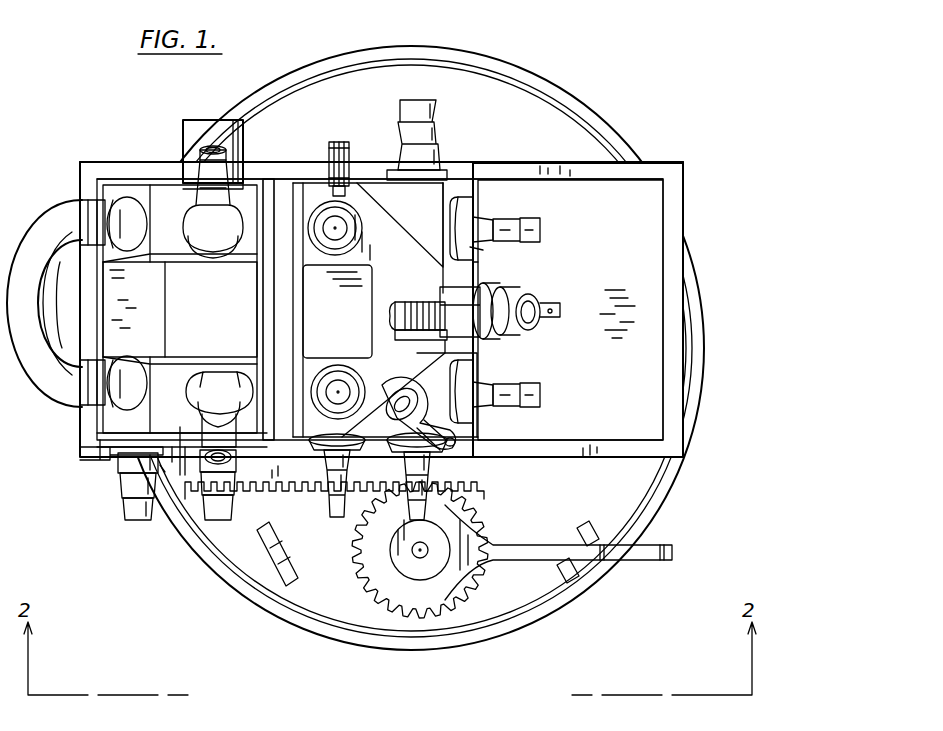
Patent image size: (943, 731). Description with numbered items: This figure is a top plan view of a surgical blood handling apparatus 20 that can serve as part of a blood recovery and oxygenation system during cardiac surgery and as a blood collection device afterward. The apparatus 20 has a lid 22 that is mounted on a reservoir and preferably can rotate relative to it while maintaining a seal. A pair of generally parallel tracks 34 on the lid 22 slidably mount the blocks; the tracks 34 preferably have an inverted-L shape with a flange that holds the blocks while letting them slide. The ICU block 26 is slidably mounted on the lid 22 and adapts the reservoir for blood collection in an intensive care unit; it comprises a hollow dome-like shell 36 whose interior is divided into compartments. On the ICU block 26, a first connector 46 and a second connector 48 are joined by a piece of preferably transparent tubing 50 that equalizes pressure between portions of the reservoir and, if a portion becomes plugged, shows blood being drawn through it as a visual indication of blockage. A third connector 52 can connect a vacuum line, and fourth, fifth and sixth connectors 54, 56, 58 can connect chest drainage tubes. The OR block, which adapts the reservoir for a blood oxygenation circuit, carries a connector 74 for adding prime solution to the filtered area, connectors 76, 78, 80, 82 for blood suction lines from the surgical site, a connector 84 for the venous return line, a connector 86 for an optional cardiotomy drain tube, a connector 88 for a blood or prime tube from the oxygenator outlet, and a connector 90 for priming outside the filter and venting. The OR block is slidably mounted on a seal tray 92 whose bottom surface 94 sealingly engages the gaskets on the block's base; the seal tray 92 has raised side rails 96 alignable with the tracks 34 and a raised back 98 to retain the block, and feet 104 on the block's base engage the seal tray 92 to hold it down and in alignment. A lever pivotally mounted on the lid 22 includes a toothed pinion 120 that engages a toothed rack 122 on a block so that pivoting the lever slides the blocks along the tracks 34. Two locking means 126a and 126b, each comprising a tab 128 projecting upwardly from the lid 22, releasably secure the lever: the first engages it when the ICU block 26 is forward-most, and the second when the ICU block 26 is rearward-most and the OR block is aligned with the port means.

The surgical blood handling apparatus 20 is at (640, 606).
The lid 22 is at (676, 488).
The ICU block 26 is at (97, 463).
The tracks 34 is at (125, 160).
The shell 36 is at (215, 318).
The first connector 46 is at (100, 403).
The second connector 48 is at (97, 210).
The transparent tubing 50 is at (33, 373).
The third connector 52 is at (200, 173).
The fourth connector 54 is at (205, 515).
The fifth connector 56 is at (212, 538).
The sixth connector 58 is at (135, 512).
The connector 74 is at (340, 388).
The connector 76 is at (473, 443).
The connector 78 is at (335, 520).
The connector 80 is at (447, 467).
The connector 82 is at (508, 402).
The connector 84 is at (493, 337).
The connector 86 is at (530, 224).
The connector 88 is at (397, 117).
The connector 90 is at (333, 220).
The seal tray 92 is at (697, 172).
The bottom surface 94 is at (626, 286).
The side rails 96 is at (593, 170).
The raised back 98 is at (675, 388).
The feet 104 is at (485, 248).
The toothed pinion 120 is at (382, 605).
The toothed rack 122 is at (272, 493).
The locking means 126a is at (288, 592).
The locking means 126b is at (560, 587).
The tab 128 is at (288, 566).